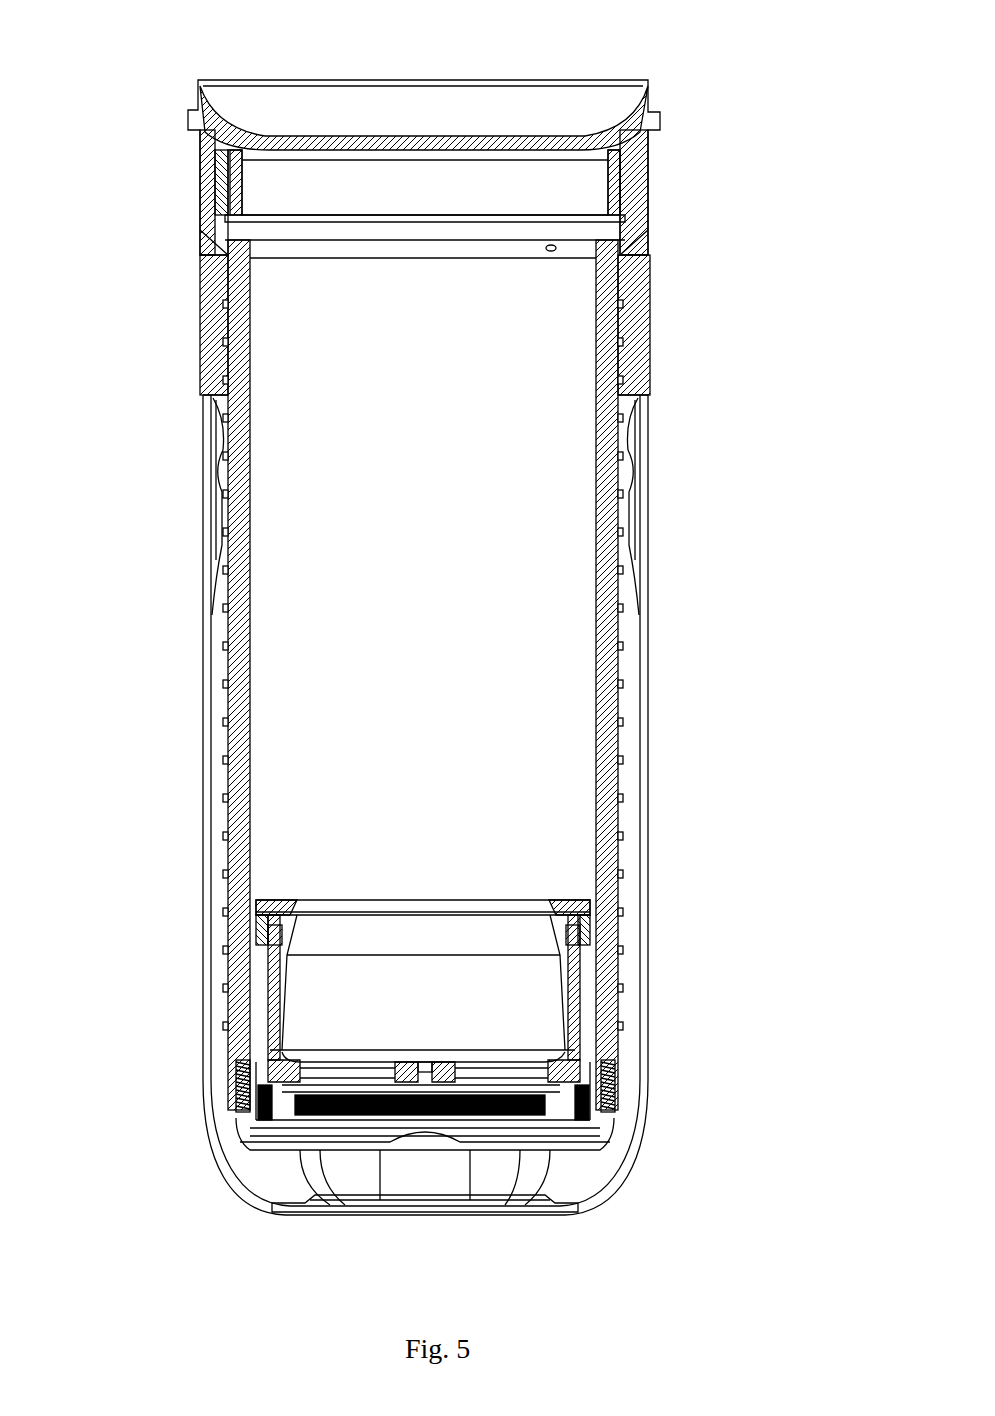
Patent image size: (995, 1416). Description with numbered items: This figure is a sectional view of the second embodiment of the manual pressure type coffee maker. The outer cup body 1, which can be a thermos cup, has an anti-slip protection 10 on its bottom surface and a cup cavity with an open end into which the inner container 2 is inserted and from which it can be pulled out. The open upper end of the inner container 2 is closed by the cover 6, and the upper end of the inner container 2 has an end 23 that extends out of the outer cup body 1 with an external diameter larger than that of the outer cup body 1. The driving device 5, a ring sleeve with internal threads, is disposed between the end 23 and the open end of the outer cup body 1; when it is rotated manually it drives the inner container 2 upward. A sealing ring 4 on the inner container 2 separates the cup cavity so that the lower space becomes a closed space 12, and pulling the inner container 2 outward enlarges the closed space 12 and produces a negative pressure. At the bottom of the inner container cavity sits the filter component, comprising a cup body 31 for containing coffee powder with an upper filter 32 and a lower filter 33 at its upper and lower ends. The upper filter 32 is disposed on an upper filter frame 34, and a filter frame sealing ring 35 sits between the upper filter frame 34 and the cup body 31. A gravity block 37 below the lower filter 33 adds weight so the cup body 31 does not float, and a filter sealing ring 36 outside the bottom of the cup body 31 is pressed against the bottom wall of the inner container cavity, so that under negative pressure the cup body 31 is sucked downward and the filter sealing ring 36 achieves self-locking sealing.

The outer cup body 1 is at (633, 765).
The inner container 2 is at (640, 485).
The sealing ring 4 is at (240, 1085).
The driving device 5 is at (648, 335).
The cover 6 is at (200, 115).
The anti-slip protection 10 is at (383, 1212).
The closed space 12 is at (262, 1135).
The end 23 is at (648, 212).
The cup body 31 is at (270, 993).
The upper filter 32 is at (495, 912).
The lower filter 33 is at (540, 1066).
The upper filter frame 34 is at (262, 910).
The filter frame sealing ring 35 is at (575, 940).
The filter sealing ring 36 is at (607, 1088).
The gravity block 37 is at (515, 1115).